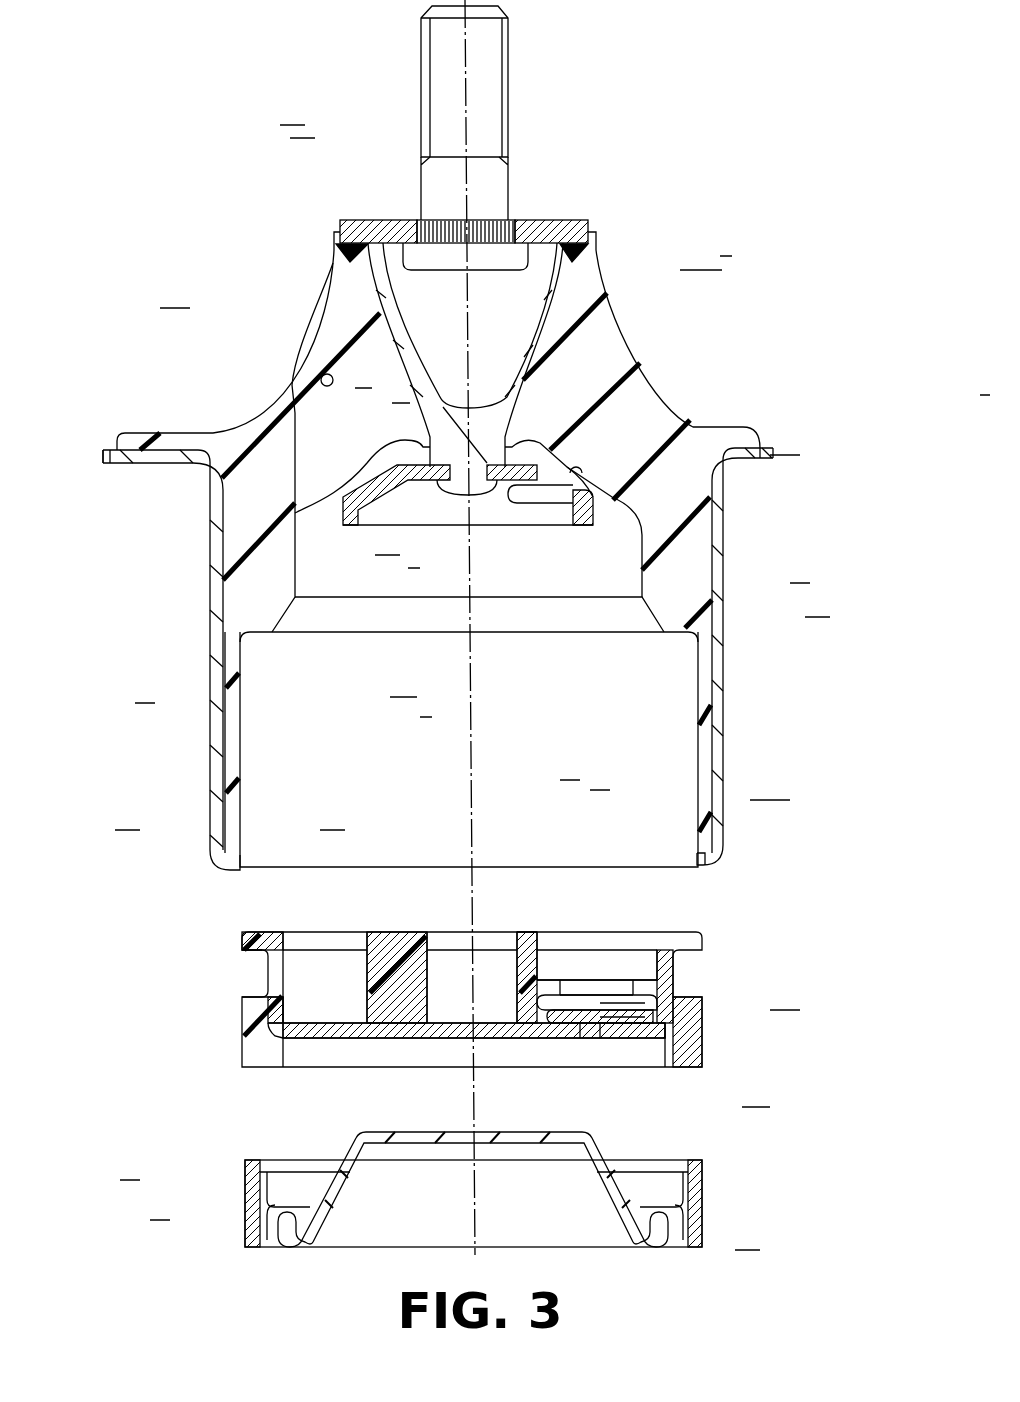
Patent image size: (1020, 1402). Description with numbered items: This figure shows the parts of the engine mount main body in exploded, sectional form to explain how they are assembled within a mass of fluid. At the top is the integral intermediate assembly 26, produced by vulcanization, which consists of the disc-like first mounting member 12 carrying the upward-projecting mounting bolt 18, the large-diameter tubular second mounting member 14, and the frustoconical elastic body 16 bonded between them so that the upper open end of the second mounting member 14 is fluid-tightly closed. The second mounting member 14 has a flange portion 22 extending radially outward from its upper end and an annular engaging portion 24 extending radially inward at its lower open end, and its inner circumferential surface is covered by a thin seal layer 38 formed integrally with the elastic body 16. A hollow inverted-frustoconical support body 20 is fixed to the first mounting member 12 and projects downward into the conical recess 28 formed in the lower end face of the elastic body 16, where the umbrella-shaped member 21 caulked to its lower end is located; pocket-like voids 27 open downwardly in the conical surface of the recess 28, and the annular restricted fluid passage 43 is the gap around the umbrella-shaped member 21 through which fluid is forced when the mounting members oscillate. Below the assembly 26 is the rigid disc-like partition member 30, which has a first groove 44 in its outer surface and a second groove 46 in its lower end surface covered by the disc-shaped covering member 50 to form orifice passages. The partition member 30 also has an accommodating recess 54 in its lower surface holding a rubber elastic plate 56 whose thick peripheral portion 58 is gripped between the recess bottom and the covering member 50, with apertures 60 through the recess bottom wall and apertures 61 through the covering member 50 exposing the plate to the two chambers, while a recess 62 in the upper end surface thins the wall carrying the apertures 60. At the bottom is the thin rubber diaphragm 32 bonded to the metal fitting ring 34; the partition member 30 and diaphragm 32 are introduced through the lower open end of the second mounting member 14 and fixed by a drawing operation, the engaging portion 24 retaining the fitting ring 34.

The first mounting member 12 is at (363, 230).
The second mounting member 14 is at (717, 690).
The elastic body 16 is at (636, 390).
The mounting bolt 18 is at (433, 55).
The support body 20 is at (538, 330).
The umbrella-shaped member 21 is at (375, 485).
The flange portion 22 is at (172, 460).
The annular engaging portion 24 is at (712, 868).
The integral intermediate assembly 26 is at (641, 248).
The pocket-like voids 27 is at (322, 376).
The conical recess 28 is at (576, 470).
The partition member 30 is at (262, 922).
The diaphragm 32 is at (617, 1197).
The fitting ring 34 is at (250, 1185).
The seal layer 38 is at (232, 728).
The annular restricted fluid passage 43 is at (620, 515).
The first groove 44 is at (260, 997).
The second groove 46 is at (367, 973).
The covering member 50 is at (343, 1033).
The accommodating recess 54 is at (570, 1010).
The elastic plate 56 is at (620, 1017).
The peripheral portion 58 is at (650, 1013).
The apertures 60 is at (603, 990).
The apertures 61 is at (590, 1030).
The recess 62 is at (537, 960).